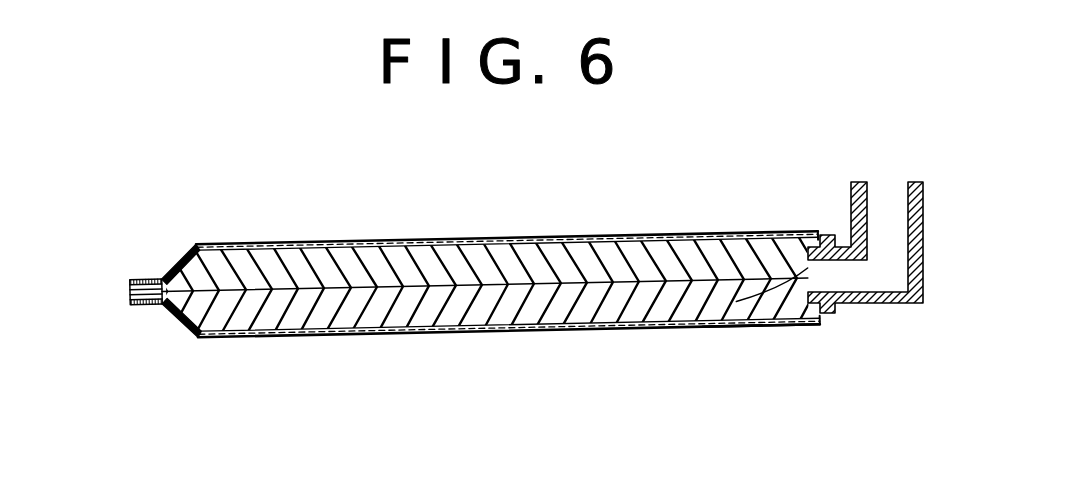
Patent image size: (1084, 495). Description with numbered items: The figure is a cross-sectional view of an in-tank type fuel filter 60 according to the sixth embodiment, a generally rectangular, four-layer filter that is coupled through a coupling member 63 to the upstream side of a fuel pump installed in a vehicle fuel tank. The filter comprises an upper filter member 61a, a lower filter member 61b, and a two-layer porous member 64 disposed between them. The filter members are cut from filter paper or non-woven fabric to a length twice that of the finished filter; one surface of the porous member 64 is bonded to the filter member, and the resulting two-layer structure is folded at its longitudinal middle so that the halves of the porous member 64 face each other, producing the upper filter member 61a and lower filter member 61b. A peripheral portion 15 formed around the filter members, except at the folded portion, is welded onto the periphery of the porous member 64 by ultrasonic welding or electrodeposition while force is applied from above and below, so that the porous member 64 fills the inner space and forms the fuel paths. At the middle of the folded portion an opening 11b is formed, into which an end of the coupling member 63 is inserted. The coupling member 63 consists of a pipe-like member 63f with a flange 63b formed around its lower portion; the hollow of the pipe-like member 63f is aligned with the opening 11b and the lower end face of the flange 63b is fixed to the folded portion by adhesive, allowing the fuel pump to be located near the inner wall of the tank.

The in-tank type fuel filter 60 is at (463, 275).
The upper filter member 61a is at (263, 247).
The lower filter member 61b is at (242, 337).
The two-layer porous member 64 is at (455, 263).
The peripheral portion 15 is at (161, 281).
The opening 11b is at (720, 325).
The coupling member 63 is at (867, 274).
The pipe-like member 63f is at (850, 212).
The flange 63b is at (840, 310).